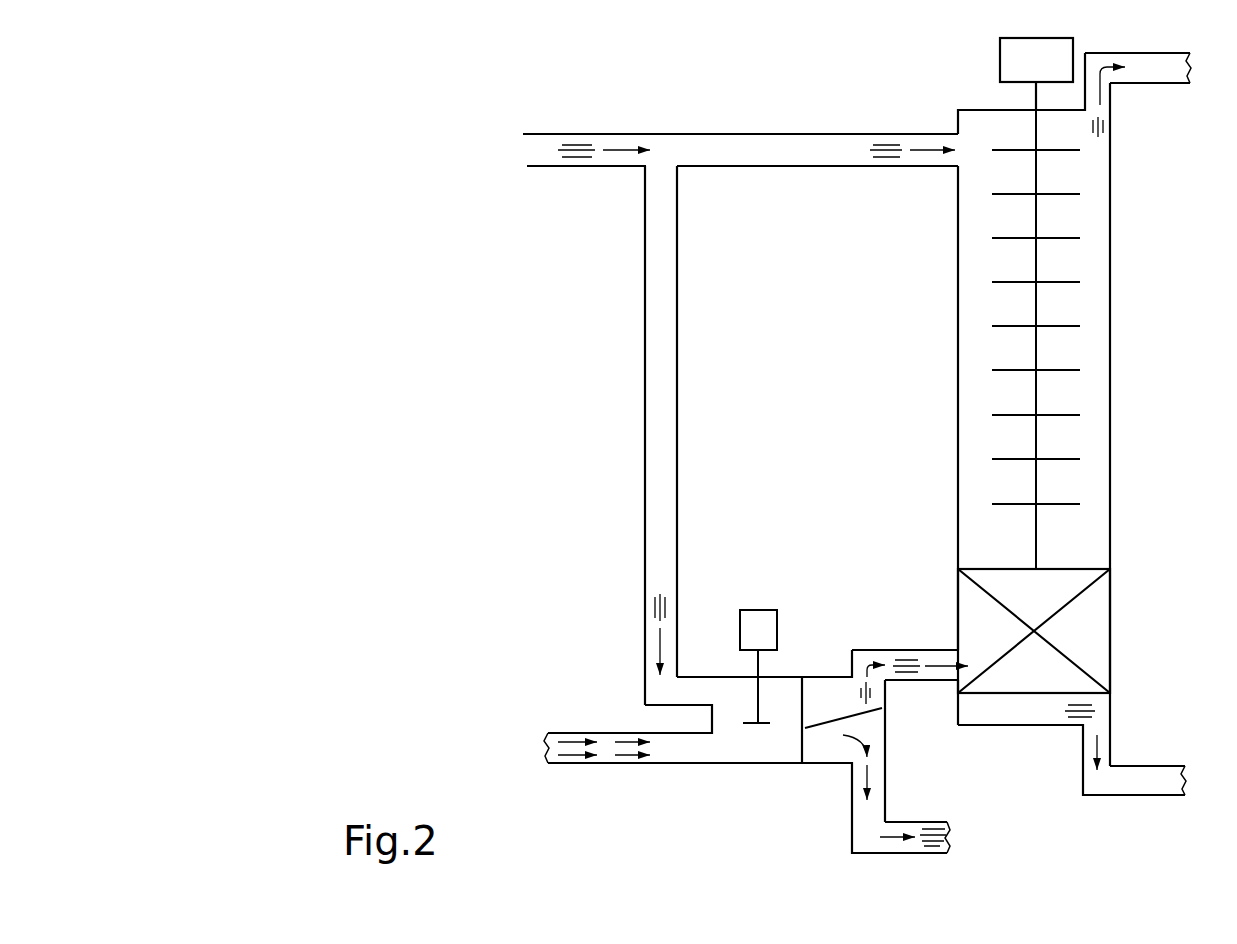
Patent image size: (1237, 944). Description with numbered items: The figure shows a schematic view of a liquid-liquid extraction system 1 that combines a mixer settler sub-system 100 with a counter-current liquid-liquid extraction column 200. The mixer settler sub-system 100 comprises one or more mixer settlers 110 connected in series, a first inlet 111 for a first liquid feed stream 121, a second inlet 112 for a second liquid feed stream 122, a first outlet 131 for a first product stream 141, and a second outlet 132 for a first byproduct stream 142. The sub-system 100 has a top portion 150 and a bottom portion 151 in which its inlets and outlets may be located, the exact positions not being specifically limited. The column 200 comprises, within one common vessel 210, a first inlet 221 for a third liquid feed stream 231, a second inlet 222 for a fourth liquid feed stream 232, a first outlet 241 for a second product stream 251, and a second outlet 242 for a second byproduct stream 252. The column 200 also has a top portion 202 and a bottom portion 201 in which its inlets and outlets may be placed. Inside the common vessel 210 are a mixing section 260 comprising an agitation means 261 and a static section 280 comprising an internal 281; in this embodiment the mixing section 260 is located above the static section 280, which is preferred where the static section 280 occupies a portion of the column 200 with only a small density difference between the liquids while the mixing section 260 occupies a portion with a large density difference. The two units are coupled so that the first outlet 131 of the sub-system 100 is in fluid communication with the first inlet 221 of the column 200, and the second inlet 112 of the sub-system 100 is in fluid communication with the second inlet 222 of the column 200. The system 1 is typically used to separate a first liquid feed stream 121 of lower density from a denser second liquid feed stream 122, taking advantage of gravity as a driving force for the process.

The liquid-liquid extraction system 1 is at (722, 97).
The mixer settler sub-system 100 is at (727, 765).
The mixer settler 110 is at (812, 765).
The first inlet 111 is at (710, 752).
The second inlet 112 is at (655, 690).
The first liquid feed stream 121 is at (565, 758).
The second liquid feed stream 122 is at (573, 147).
The first outlet 131 is at (860, 660).
The second outlet 132 is at (878, 763).
The first product stream 141 is at (868, 694).
The first byproduct stream 142 is at (870, 734).
The top portion 150 is at (822, 687).
The bottom portion 151 is at (820, 752).
The counter-current liquid-liquid extraction column 200 is at (995, 103).
The bottom portion 201 is at (957, 530).
The top portion 202 is at (1112, 218).
The common vessel 210 is at (957, 270).
The first inlet 221 is at (957, 656).
The second inlet 222 is at (955, 148).
The third liquid feed stream 231 is at (900, 662).
The fourth liquid feed stream 232 is at (888, 157).
The first outlet 241 is at (1100, 110).
The second outlet 242 is at (1097, 723).
The second product stream 251 is at (1103, 132).
The second byproduct stream 252 is at (1097, 713).
The mixing section 260 is at (1088, 353).
The agitation means 261 is at (1005, 415).
The static section 280 is at (1095, 641).
The internal 281 is at (1072, 605).